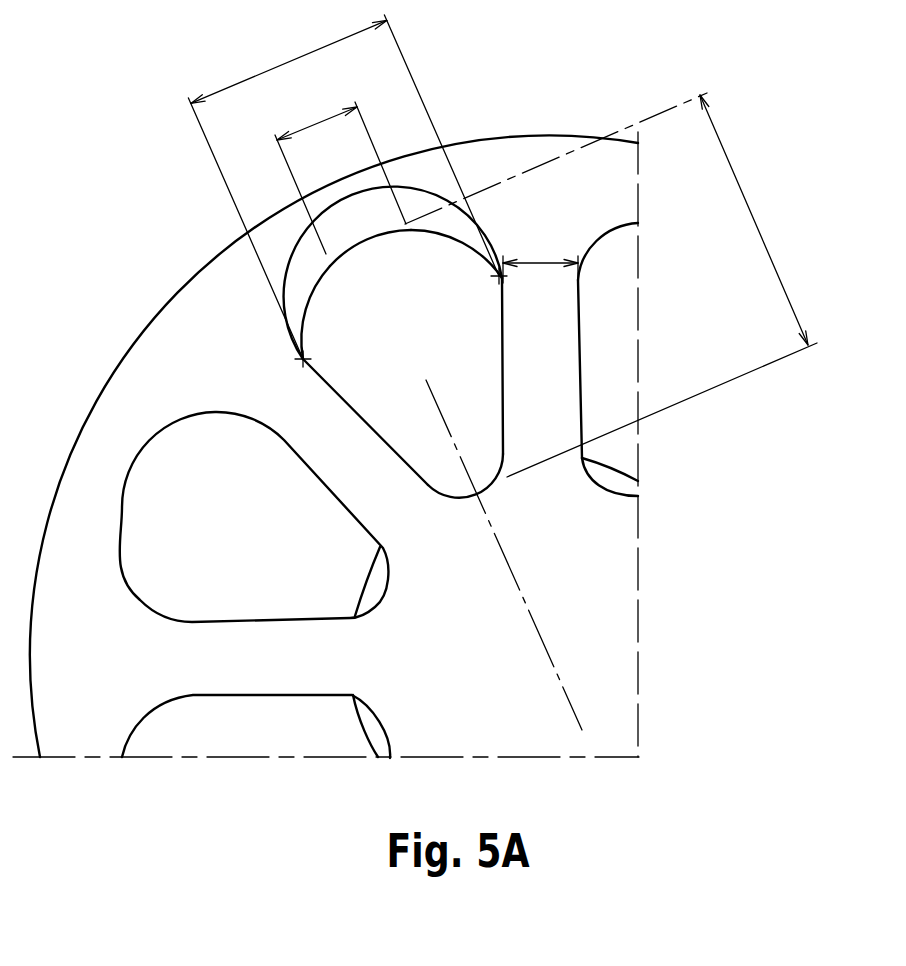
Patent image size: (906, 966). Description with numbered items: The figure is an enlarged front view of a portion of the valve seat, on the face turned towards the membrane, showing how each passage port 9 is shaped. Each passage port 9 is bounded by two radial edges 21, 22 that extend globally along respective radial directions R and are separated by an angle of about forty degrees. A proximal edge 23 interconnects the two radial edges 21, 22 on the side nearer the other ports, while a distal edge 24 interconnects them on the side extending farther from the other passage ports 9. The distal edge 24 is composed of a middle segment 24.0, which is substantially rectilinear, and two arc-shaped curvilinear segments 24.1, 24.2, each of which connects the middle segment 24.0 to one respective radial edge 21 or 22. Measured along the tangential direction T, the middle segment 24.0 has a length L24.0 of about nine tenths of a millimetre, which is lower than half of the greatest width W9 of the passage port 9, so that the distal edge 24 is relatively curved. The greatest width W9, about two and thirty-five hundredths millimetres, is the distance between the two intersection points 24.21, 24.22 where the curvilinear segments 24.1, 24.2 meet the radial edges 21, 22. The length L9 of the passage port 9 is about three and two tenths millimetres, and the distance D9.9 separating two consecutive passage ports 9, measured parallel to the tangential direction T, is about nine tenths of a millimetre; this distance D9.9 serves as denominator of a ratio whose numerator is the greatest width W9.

The passage port 9 is at (163, 530).
The radial edge 21 is at (356, 416).
The radial edge 22 is at (503, 361).
The proximal edge 23 is at (487, 490).
The distal edge 24 is at (494, 306).
The middle segment 24.0 is at (358, 246).
The curvilinear segment 24.1 is at (298, 320).
The curvilinear segment 24.2 is at (457, 243).
The intersection point 24.21 is at (300, 361).
The intersection point 24.22 is at (498, 268).
The tangential direction T is at (520, 176).
The radial direction R is at (543, 656).
The greatest width of the passage port W9 is at (343, 187).
The length of the passage port L9 is at (662, 286).
The distance separating two consecutive passage ports D9.9 is at (540, 257).
The length of the middle segment L24.0 is at (337, 177).